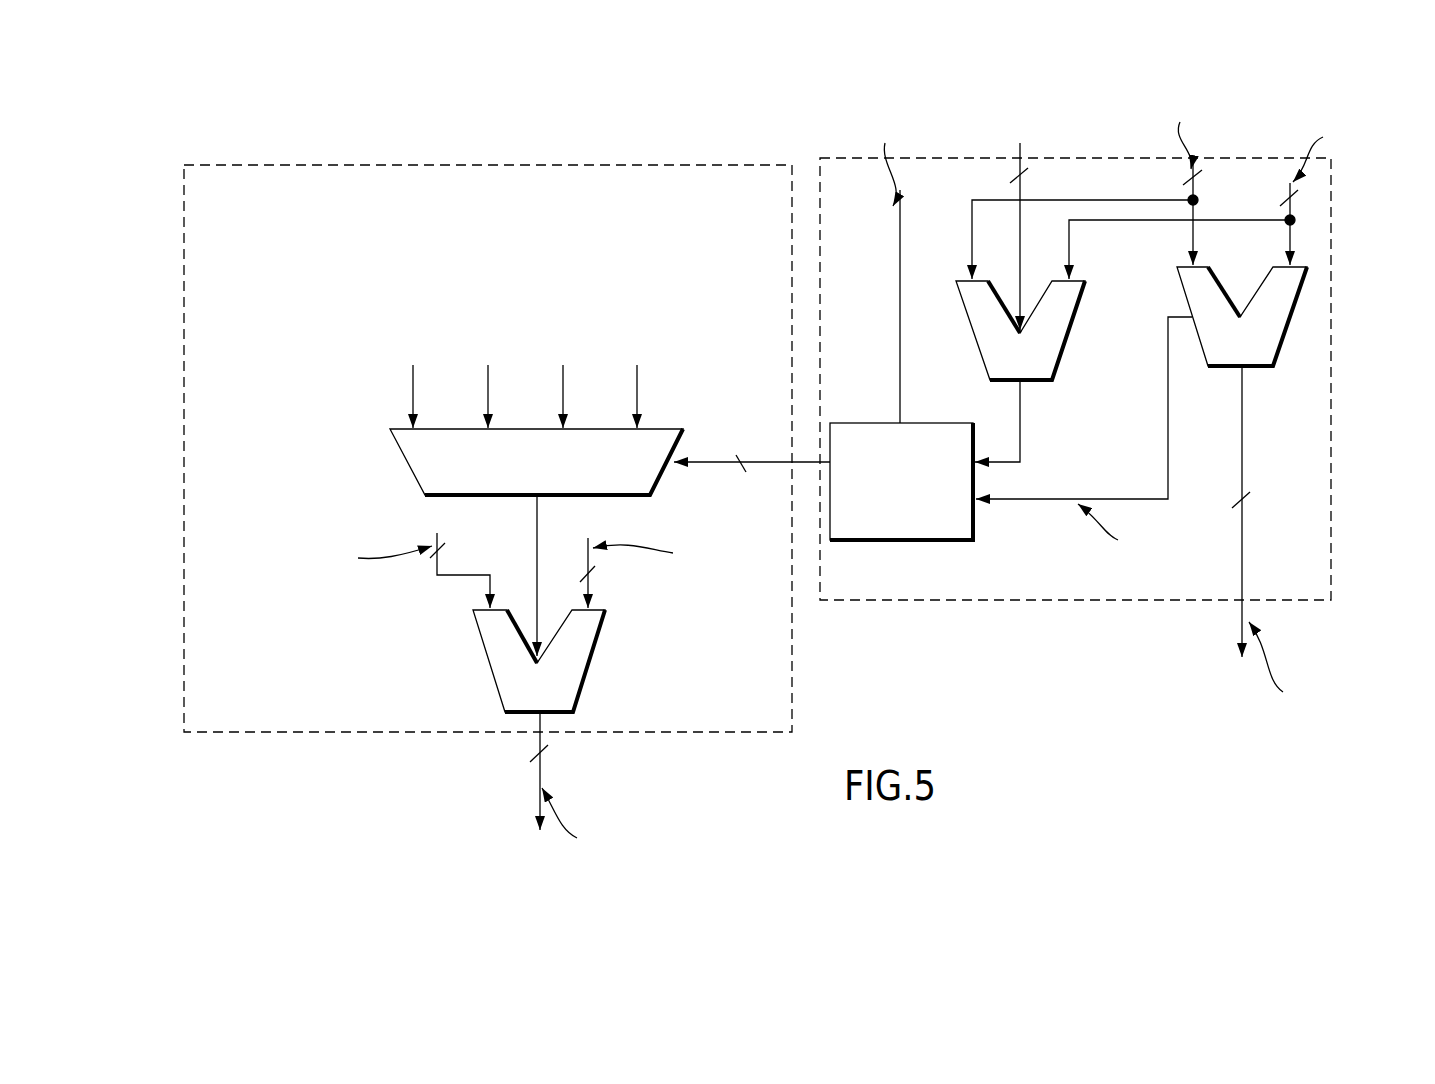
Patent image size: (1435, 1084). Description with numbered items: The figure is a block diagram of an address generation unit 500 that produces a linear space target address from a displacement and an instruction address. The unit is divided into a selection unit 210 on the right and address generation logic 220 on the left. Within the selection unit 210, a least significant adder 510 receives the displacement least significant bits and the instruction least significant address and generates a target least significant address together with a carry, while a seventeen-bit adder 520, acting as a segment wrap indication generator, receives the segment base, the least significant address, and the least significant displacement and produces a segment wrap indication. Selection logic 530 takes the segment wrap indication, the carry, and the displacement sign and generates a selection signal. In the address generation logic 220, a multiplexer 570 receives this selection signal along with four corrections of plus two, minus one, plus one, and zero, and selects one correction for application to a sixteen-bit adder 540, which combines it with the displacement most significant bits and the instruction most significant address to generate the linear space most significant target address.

The address generation unit 500 is at (726, 136).
The selection unit 210 is at (1074, 604).
The address generation logic 220 is at (672, 740).
The least significant adder 510 is at (1270, 375).
The segment wrap indication generator 520 is at (1074, 353).
The selection logic 530 is at (905, 549).
The adder 540 is at (608, 676).
The multiplexer 570 is at (670, 424).